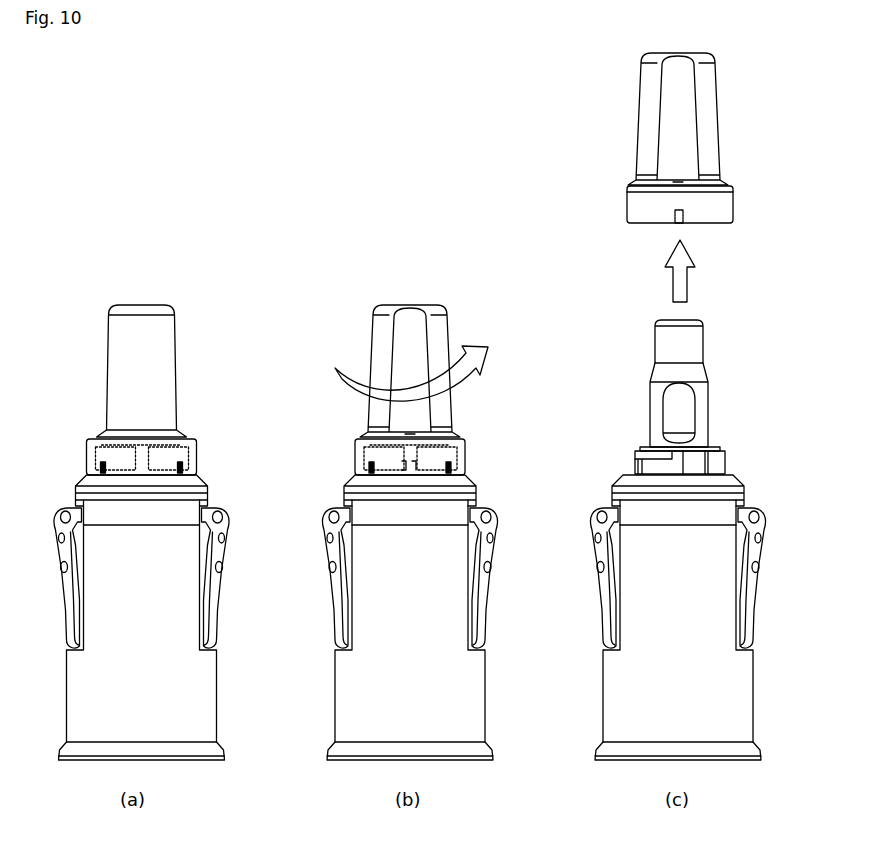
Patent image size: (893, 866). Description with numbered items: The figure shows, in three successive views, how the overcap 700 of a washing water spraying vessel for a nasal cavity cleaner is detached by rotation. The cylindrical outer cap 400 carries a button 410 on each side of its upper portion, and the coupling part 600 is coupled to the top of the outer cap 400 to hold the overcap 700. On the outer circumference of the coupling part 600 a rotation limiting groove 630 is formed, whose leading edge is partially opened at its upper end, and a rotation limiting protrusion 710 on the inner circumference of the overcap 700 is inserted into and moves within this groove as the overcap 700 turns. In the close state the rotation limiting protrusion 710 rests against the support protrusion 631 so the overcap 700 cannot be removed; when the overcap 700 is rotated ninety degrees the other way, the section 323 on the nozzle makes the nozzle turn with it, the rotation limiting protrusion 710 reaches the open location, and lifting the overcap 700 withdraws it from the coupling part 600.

The section 323 is at (690, 418).
The outer cap 400 is at (200, 688).
The button 410 is at (222, 548).
The coupling part 600 is at (192, 481).
The rotation limiting groove 630 is at (663, 469).
The support protrusion 631 is at (97, 456).
The overcap 700 is at (155, 381).
The rotation limiting protrusion 710 is at (97, 465).